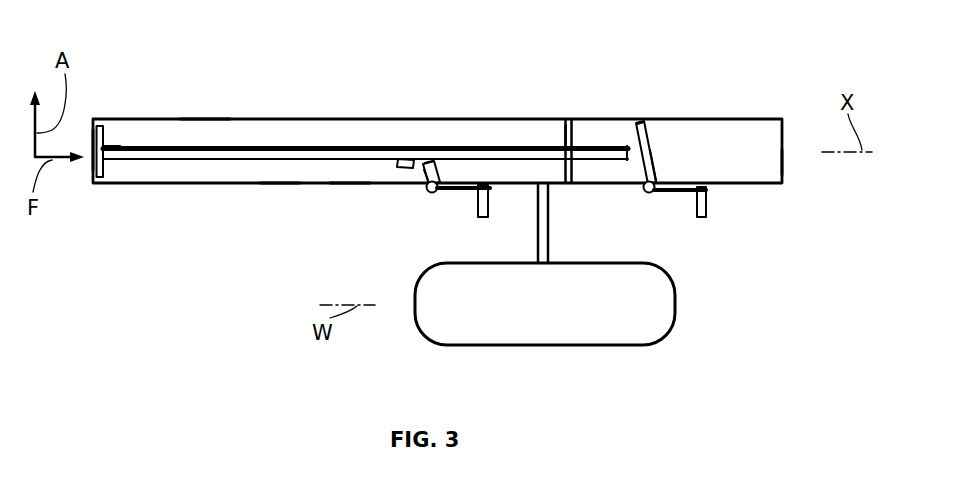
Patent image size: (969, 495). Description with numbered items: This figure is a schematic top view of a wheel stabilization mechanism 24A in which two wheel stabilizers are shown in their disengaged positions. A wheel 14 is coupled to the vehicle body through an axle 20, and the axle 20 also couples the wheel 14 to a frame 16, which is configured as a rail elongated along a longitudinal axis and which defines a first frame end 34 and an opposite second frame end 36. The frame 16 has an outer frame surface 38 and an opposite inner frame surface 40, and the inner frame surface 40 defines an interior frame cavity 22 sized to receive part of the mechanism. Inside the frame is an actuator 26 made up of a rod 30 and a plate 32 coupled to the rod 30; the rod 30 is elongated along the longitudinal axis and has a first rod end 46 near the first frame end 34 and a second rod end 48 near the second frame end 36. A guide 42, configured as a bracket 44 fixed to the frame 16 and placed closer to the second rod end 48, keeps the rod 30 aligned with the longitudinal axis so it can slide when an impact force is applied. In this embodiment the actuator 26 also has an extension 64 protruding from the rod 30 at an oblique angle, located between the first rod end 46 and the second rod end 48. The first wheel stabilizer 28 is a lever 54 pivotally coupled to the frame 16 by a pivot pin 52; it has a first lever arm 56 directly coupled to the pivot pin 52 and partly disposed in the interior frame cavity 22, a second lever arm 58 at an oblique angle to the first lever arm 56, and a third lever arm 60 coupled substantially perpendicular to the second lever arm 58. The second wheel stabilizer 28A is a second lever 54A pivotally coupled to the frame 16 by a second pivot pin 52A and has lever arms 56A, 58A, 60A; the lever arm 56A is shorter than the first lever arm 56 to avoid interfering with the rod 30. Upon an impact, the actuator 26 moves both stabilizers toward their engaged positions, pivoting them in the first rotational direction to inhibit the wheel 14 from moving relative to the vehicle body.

The wheel 14 is at (578, 263).
The frame 16 is at (762, 119).
The axle 20 is at (538, 241).
The interior frame cavity 22 is at (244, 112).
The wheel stabilization mechanism 24A is at (153, 170).
The actuator 26 is at (253, 160).
The first wheel stabilizer 28 is at (656, 146).
The second wheel stabilizer 28A is at (430, 163).
The rod 30 is at (350, 184).
The plate 32 is at (97, 184).
The first frame end 34 is at (93, 150).
The second frame end 36 is at (782, 165).
The outer frame surface 38 is at (281, 184).
The inner frame surface 40 is at (198, 124).
The guide 42 is at (571, 120).
The bracket 44 is at (563, 121).
The first rod end 46 is at (105, 150).
The second rod end 48 is at (627, 147).
The pivot pin 52 is at (643, 191).
The second pivot pin 52A is at (427, 190).
The lever 54 is at (646, 122).
The second lever 54A is at (423, 180).
The first lever arm 56 is at (638, 124).
The lever arm 56A is at (433, 159).
The second lever arm 58 is at (665, 192).
The lever arm 58A is at (440, 191).
The third lever arm 60 is at (706, 202).
The lever arm 60A is at (477, 205).
The extension 64 is at (397, 159).